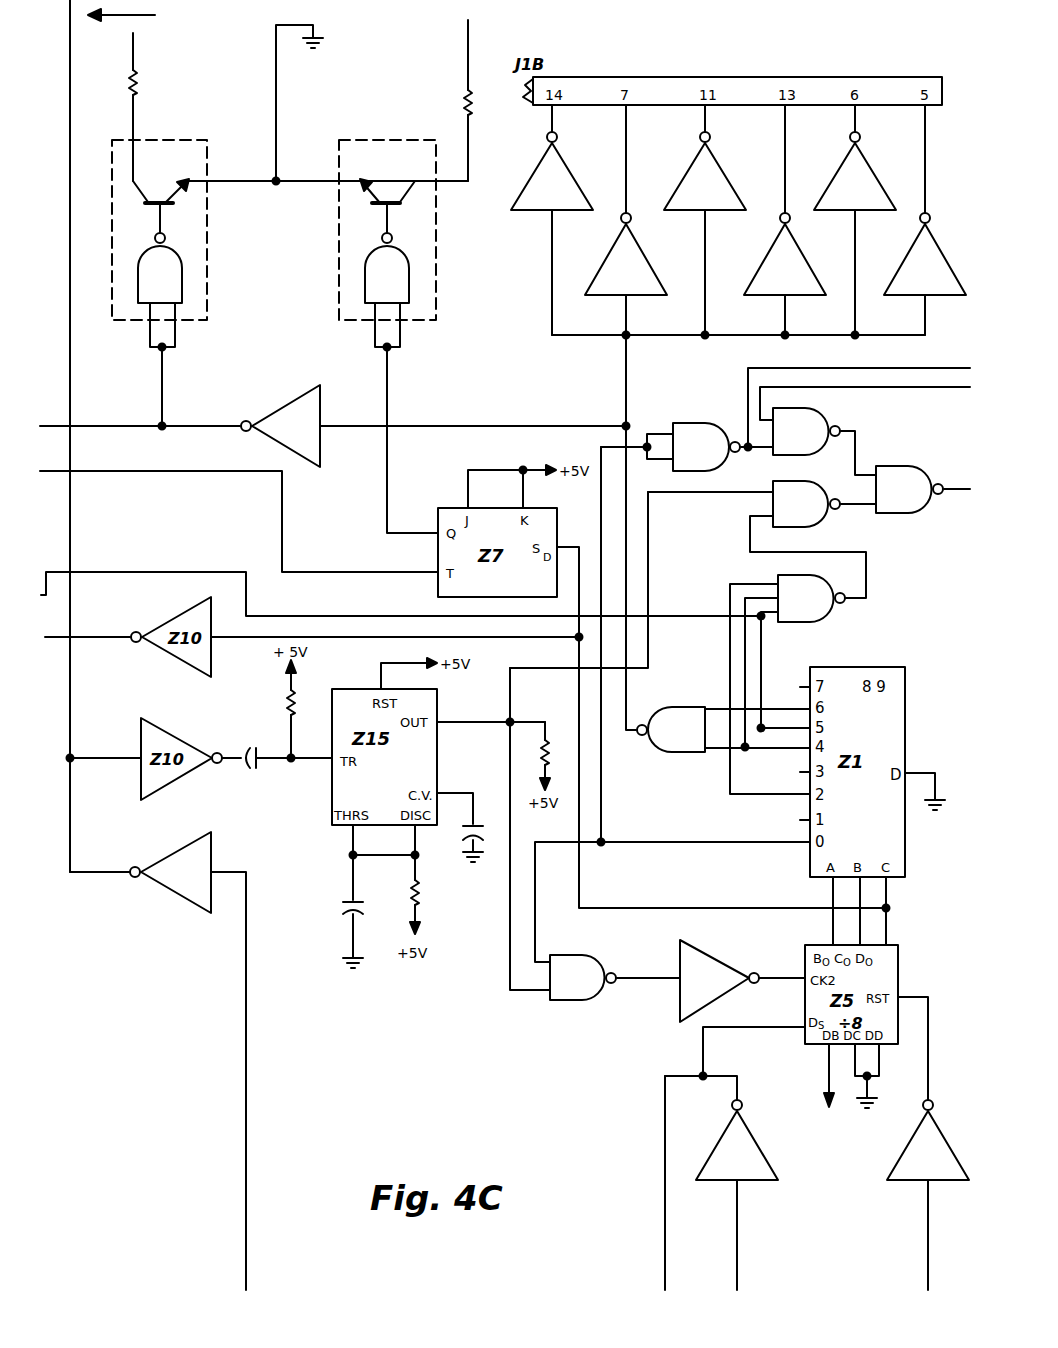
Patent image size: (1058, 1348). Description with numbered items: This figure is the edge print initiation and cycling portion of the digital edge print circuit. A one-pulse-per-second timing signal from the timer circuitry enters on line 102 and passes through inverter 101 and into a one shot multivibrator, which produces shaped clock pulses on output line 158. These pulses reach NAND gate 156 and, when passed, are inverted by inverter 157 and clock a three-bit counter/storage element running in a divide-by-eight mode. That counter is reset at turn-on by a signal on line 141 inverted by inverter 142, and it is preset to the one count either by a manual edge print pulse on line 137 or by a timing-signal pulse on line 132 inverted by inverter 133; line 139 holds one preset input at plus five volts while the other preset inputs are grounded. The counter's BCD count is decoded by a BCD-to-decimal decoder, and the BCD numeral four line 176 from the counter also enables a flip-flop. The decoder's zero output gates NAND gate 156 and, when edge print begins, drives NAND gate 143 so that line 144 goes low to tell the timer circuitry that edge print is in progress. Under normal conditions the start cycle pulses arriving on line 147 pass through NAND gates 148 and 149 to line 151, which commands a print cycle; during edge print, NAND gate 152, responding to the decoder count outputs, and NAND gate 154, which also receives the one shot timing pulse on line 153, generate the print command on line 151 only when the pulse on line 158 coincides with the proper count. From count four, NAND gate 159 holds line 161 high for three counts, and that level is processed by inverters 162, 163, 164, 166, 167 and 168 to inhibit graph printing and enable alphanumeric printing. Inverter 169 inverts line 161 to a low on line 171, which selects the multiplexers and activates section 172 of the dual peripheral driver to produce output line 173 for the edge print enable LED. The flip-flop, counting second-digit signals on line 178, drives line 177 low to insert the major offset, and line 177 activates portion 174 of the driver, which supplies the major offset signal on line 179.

The inverter 101 is at (212, 858).
The line 102 is at (246, 1190).
The line 132 is at (738, 1268).
The inverter 133 is at (760, 1151).
The line 137 is at (665, 1265).
The line 139 is at (828, 1073).
The line 141 is at (928, 1247).
The inverter 142 is at (905, 1151).
The NAND gate 143 is at (687, 423).
The line 144 is at (893, 366).
The line 147 is at (950, 387).
The NAND gate 148 is at (823, 413).
The NAND gate 149 is at (893, 466).
The line 151 is at (955, 490).
The NAND gate 152 is at (805, 623).
The line 153 is at (720, 492).
The NAND gate 154 is at (822, 526).
The NAND gate 156 is at (580, 1001).
The inverter 157 is at (680, 1020).
The output line 158 is at (468, 722).
The NAND gate 159 is at (690, 753).
The line 161 is at (628, 708).
The inverter 162 is at (572, 168).
The inverter 163 is at (658, 262).
The inverter 164 is at (727, 168).
The inverter 166 is at (812, 262).
The inverter 167 is at (877, 168).
The inverter 168 is at (945, 248).
The inverter 169 is at (265, 418).
The line 171 is at (196, 426).
The section of Z11 172 is at (190, 140).
The output line 173 is at (134, 55).
The portion of Z11 174 is at (376, 140).
The line 176 is at (833, 887).
The line 177 is at (392, 489).
The line 178 is at (351, 572).
The line 179 is at (468, 60).